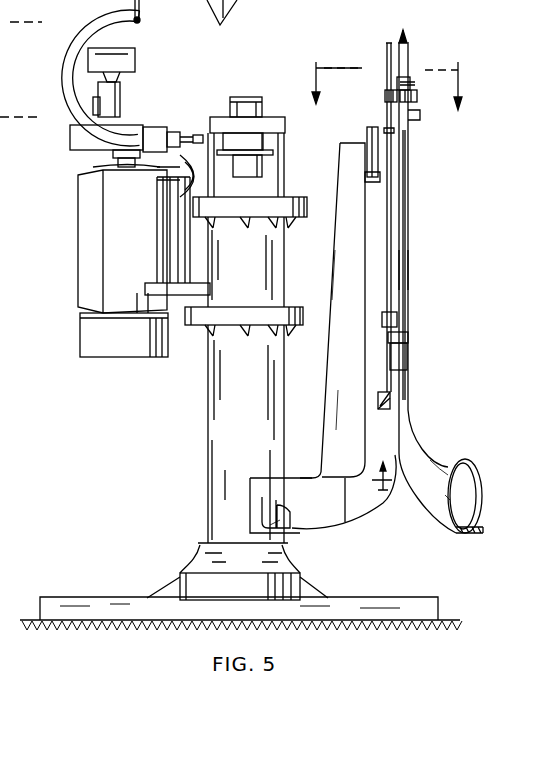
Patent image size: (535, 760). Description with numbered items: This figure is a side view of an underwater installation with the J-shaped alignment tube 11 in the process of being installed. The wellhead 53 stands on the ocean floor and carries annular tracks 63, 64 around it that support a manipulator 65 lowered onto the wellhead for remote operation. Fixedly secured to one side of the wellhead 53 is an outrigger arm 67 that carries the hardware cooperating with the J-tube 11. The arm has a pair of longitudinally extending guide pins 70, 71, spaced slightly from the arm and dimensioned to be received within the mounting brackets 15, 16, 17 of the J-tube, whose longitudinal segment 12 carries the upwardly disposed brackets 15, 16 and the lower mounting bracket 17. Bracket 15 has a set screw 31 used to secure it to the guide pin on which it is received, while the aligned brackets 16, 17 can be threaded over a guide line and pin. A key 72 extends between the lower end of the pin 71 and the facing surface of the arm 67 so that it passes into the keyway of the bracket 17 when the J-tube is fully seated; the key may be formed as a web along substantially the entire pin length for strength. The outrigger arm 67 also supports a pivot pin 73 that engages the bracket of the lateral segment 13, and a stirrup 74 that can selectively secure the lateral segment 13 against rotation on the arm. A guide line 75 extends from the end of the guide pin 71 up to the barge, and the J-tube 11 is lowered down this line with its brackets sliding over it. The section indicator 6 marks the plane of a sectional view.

The section line 6- 6 is at (385, 97).
The J-shaped alignment tube 11 is at (415, 261).
The longitudinal segment 12 is at (409, 195).
The lateral segment 13 is at (415, 465).
The mounting bracket 15 is at (417, 96).
The mounting bracket 16 is at (385, 95).
The lower mounting bracket 17 is at (398, 318).
The set screw 31 is at (420, 115).
The wellhead 53 is at (176, 448).
The annular track 63 is at (296, 197).
The annular track 64 is at (292, 307).
The manipulator 65 is at (82, 240).
The outrigger arm 67 is at (314, 485).
The guide pin 70 is at (372, 126).
The guide pin 71 is at (388, 128).
The key 72 is at (383, 375).
The pivot pin 73 is at (393, 490).
The stirrup 74 is at (287, 530).
The guide line 75 is at (389, 46).